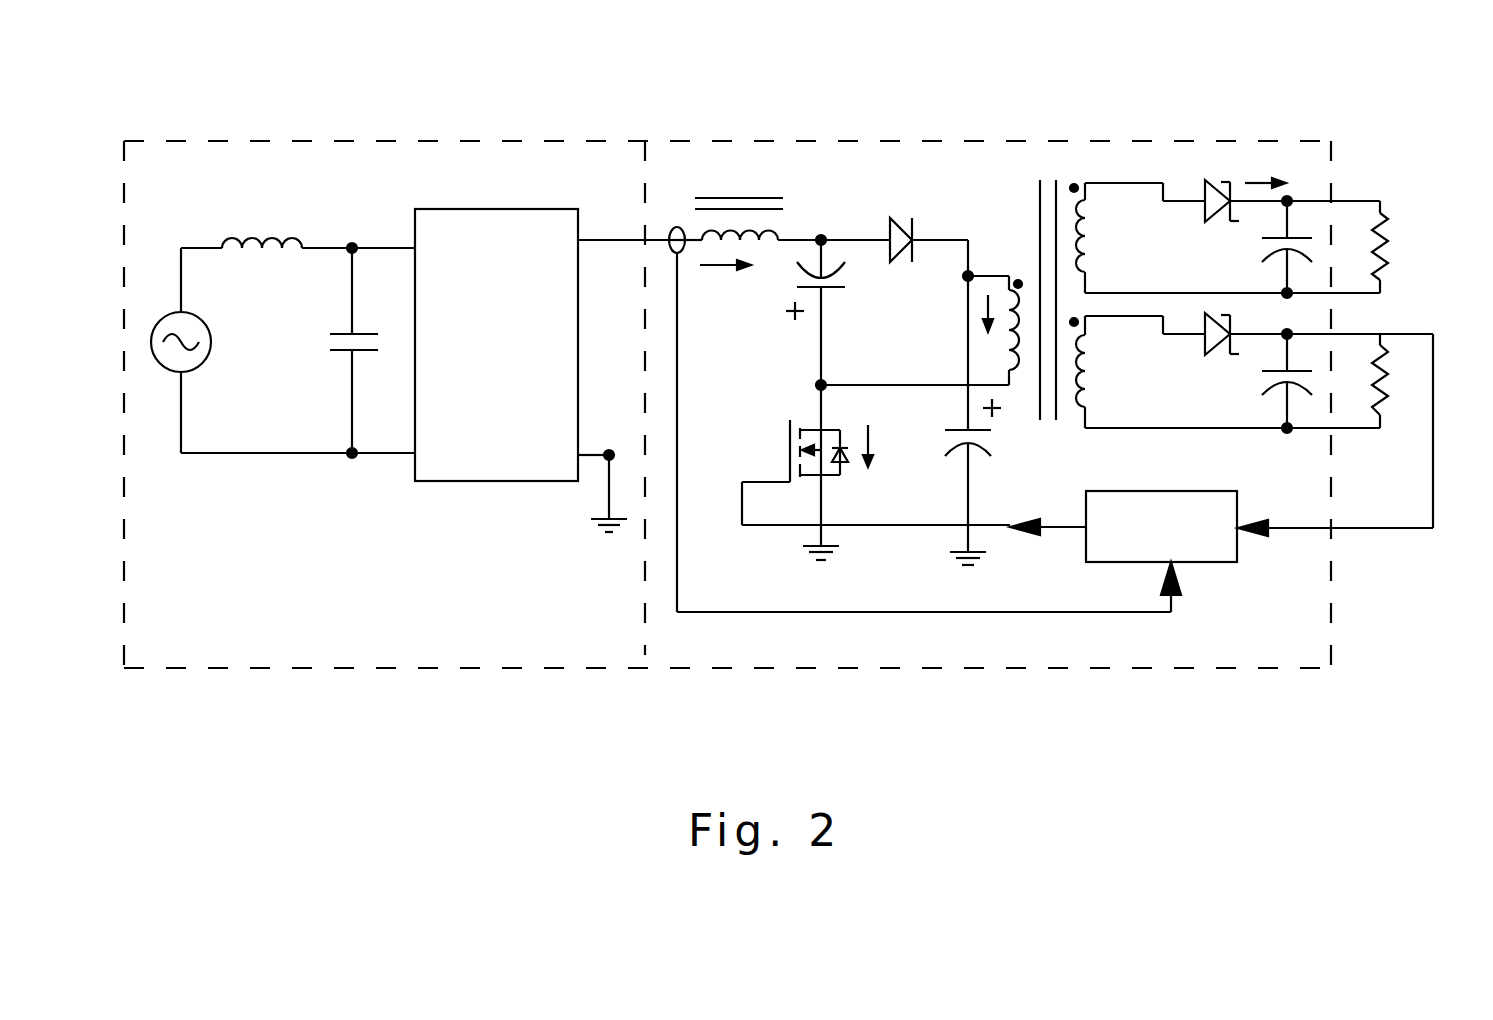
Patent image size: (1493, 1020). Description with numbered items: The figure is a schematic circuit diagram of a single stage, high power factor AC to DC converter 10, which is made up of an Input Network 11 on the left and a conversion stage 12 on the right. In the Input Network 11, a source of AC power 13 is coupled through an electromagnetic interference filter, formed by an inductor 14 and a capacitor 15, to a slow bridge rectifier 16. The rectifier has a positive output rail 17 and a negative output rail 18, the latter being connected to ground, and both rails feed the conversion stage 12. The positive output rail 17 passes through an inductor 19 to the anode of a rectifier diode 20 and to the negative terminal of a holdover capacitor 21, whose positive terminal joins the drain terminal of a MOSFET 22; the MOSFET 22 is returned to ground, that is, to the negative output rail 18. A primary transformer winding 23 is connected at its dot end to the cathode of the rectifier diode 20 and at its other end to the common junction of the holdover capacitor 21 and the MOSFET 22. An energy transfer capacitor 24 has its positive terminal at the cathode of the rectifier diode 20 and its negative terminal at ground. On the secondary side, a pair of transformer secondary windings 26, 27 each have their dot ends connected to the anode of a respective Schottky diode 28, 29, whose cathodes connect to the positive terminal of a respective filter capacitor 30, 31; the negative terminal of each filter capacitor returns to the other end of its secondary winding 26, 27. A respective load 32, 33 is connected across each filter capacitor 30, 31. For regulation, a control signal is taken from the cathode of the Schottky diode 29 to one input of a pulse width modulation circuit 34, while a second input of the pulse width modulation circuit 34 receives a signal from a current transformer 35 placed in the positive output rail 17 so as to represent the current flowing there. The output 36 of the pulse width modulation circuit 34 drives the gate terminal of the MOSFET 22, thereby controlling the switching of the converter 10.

The AC to DC converter 10 is at (485, 688).
The Input Network 11 is at (408, 132).
The conversion stage 12 is at (1006, 132).
The source of AC power 13 is at (205, 364).
The inductor 14 is at (253, 228).
The capacitor 15 is at (298, 350).
The slow bridge rectifier 16 is at (503, 482).
The positive output rail 17 is at (598, 232).
The negative output rail 18 is at (598, 452).
The inductor 19 is at (747, 198).
The rectifier diode 20 is at (893, 218).
The holdover capacitor 21 is at (836, 290).
The MOSFET 22 is at (843, 478).
The primary transformer winding 23 is at (1012, 300).
The energy transfer capacitor 24 is at (980, 445).
The transformer secondary winding 26 is at (1087, 226).
The transformer secondary winding 27 is at (1087, 360).
The Schottky diode 28 is at (1205, 225).
The Schottky diode 29 is at (1205, 358).
The filter capacitor 30 is at (1300, 237).
The filter capacitor 31 is at (1278, 428).
The load 32 is at (1384, 270).
The load 33 is at (1384, 398).
The pulse width modulation circuit 34 is at (1215, 564).
The current transformer 35 is at (677, 227).
The output 36 is at (1068, 530).